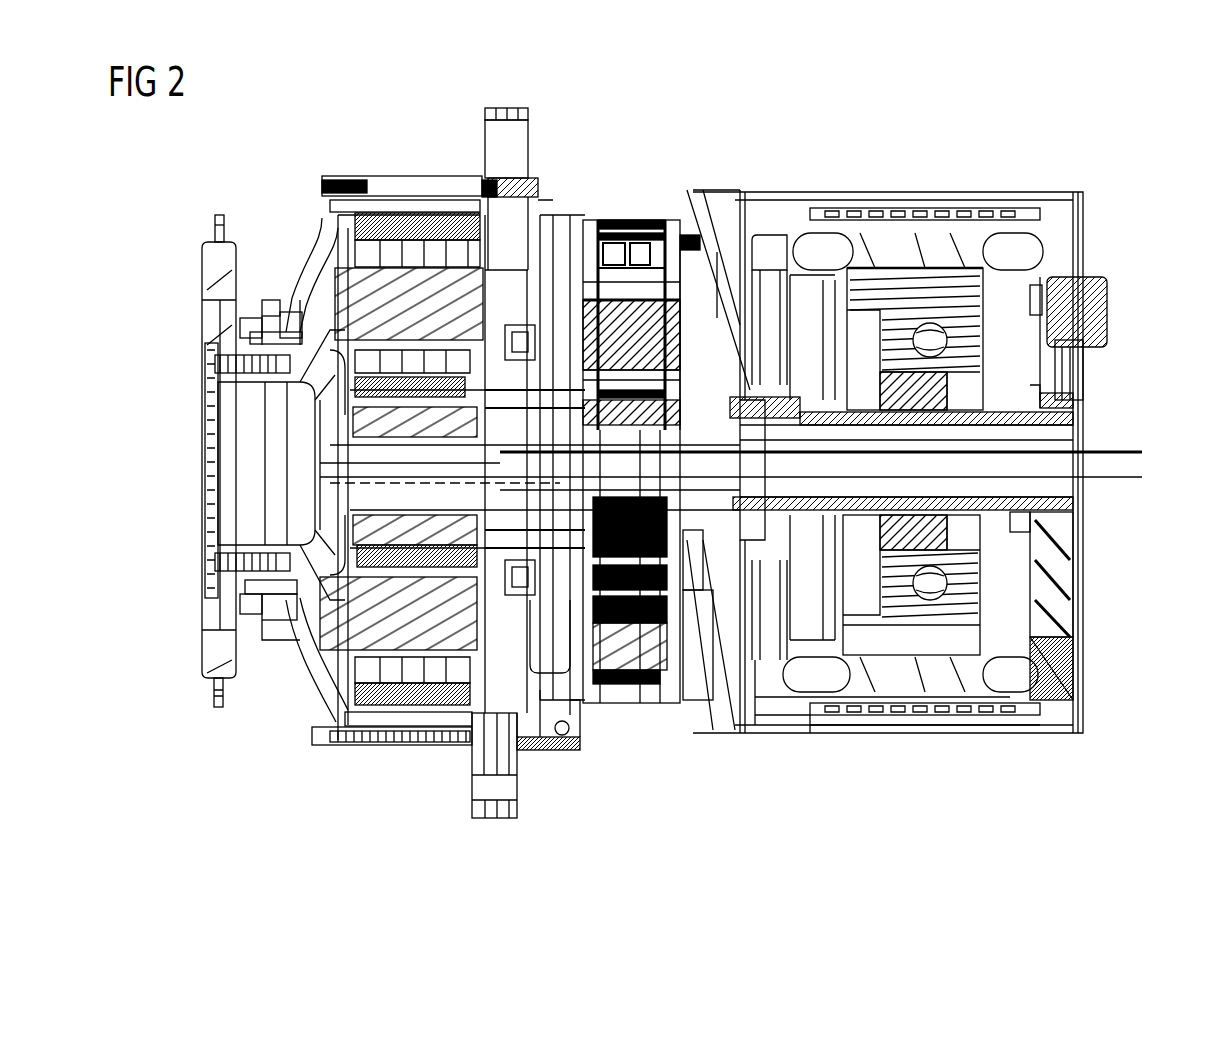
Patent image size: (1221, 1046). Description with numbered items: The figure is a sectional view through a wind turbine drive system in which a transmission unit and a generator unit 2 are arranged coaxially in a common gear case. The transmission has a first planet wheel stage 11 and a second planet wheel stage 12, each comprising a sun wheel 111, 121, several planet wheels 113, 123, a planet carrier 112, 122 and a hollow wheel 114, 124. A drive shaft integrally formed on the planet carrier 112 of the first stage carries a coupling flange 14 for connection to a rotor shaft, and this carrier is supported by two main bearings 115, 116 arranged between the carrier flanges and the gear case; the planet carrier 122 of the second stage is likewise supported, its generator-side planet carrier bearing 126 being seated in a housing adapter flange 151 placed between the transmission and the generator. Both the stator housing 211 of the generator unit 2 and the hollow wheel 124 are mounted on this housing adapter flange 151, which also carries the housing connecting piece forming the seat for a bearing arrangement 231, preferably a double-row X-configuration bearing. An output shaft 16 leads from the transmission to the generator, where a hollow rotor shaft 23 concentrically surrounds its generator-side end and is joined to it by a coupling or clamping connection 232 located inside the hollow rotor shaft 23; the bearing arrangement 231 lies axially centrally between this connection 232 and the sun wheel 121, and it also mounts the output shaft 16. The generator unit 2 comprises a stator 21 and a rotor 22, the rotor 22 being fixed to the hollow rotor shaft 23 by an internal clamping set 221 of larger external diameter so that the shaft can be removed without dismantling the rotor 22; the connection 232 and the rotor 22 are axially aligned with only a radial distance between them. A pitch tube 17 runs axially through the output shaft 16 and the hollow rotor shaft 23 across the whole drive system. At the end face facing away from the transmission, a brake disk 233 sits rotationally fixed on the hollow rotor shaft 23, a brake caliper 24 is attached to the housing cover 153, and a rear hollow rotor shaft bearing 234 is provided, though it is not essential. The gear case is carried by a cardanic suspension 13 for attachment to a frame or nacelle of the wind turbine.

The generator unit 2 is at (971, 171).
The first planet wheel stage 11 is at (376, 128).
The second planet wheel stage 12 is at (678, 130).
The suspension 13 is at (503, 757).
The coupling flange 14 is at (218, 258).
The output shaft 16 is at (842, 682).
The pitch tube 17 is at (1142, 477).
The stator 21 is at (873, 232).
The rotor 22 is at (920, 287).
The hollow rotor shaft 23 is at (1060, 422).
The brake caliper 24 is at (1097, 297).
The sun wheel 111 is at (385, 462).
The planet carrier 112 is at (317, 673).
The planet wheels 113 is at (437, 693).
The hollow wheel 114 is at (383, 722).
The bearing 115 is at (282, 315).
The bearing 116 is at (527, 333).
The sun wheel 121 is at (598, 262).
The planet carrier 122 is at (678, 265).
The planet wheels 123 is at (630, 235).
The hollow wheel 124 is at (612, 680).
The planet carrier bearing 126 is at (688, 655).
The housing adapter flange 151 is at (733, 262).
The housing cover 153 is at (1067, 657).
The stator housing 211 is at (780, 720).
The internal clamping set 221 is at (1033, 537).
The bearing arrangement 231 is at (760, 620).
The coupling or clamping connection 232 is at (826, 425).
The brake disk 233 is at (1080, 358).
The rear hollow rotor shaft bearing 234 is at (1080, 413).